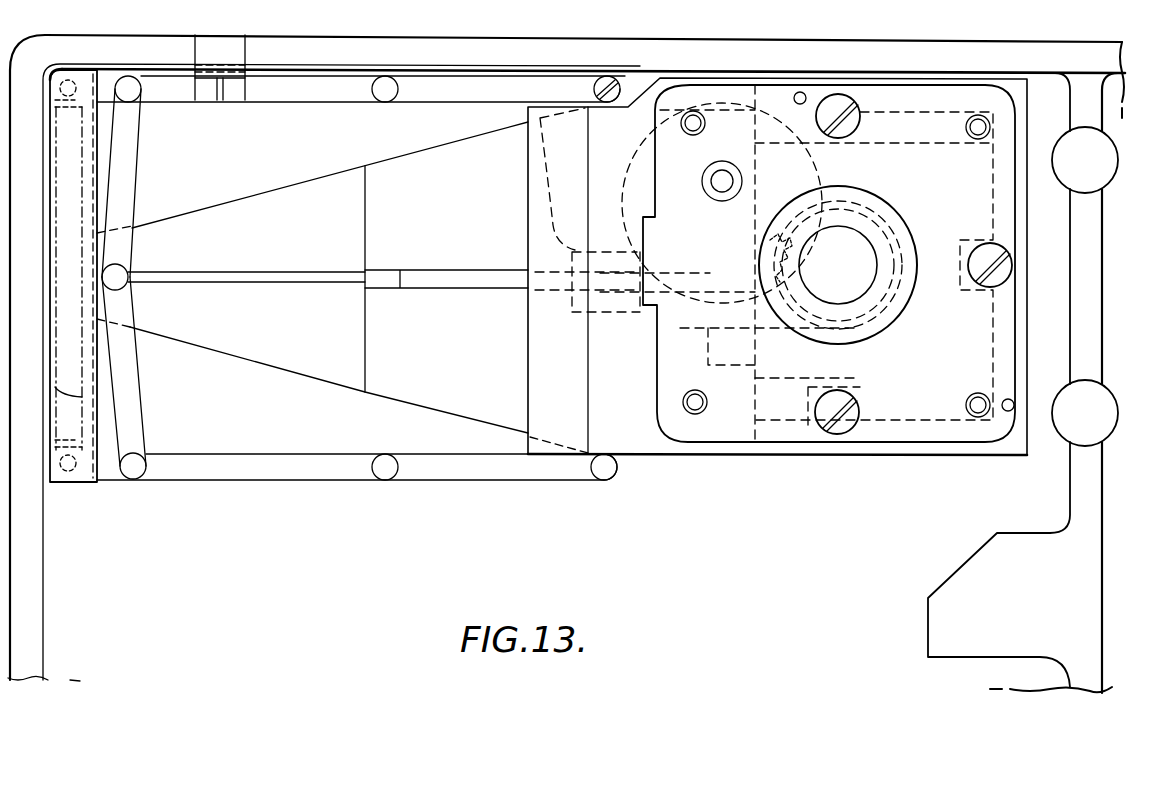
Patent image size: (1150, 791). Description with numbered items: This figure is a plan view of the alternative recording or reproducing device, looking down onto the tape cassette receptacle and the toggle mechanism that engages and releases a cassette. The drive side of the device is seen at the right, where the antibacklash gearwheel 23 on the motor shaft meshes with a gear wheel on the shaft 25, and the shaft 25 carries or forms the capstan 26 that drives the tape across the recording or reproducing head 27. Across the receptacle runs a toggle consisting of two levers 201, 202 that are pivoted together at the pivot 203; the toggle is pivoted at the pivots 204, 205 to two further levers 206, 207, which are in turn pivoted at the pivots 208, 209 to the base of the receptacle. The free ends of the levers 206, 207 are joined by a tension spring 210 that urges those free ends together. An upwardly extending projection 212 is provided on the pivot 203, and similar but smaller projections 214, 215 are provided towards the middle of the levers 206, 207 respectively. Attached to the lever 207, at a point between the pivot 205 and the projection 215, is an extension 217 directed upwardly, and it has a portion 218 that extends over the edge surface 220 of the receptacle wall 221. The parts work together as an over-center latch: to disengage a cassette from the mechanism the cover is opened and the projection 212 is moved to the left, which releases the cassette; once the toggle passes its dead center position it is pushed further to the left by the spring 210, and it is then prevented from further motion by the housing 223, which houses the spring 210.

The antibacklash gearwheel 23 is at (900, 231).
The shaft 25 is at (720, 177).
The capstan 26 is at (723, 192).
The recording or reproducing head 27 is at (660, 338).
The lever 201 is at (132, 425).
The lever 202 is at (120, 182).
The pivot 203 is at (117, 278).
The pivot 204 is at (137, 470).
The pivot 205 is at (128, 84).
The lever 206 is at (178, 469).
The lever 207 is at (335, 96).
The pivot 208 is at (614, 469).
The pivot 209 is at (608, 86).
The tension spring 210 is at (60, 393).
The projection 212 is at (127, 268).
The projection 214 is at (387, 470).
The projection 215 is at (383, 88).
The extension 217 is at (236, 90).
The portion 218 is at (222, 50).
The edge surface 220 is at (528, 38).
The receptacle wall 221 is at (873, 57).
The housing 223 is at (70, 360).